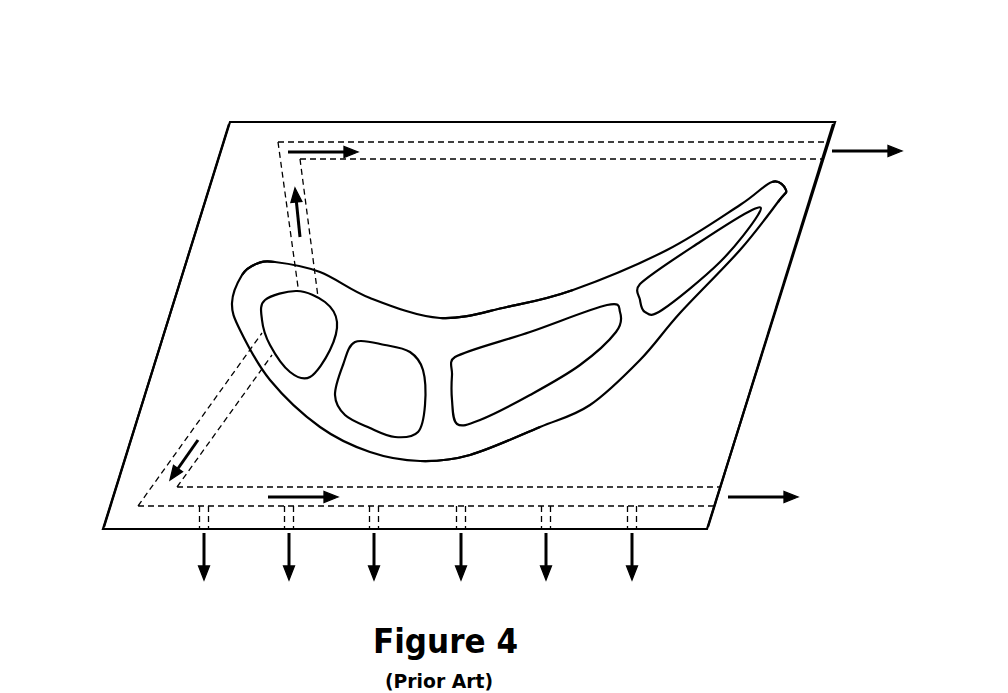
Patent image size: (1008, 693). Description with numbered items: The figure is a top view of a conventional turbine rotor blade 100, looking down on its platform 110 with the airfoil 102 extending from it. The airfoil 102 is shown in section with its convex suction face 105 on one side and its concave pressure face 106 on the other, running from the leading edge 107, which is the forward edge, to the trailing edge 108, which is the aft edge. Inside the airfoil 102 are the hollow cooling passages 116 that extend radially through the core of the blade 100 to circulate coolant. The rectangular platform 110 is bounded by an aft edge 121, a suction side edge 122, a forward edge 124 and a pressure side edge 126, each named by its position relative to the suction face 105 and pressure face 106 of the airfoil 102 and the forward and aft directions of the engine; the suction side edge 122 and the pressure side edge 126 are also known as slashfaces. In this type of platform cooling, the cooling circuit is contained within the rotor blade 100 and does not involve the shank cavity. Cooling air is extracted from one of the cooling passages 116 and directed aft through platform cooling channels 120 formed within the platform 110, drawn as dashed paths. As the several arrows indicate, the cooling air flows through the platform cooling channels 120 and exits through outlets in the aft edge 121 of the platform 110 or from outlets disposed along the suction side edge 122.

The turbine rotor blade 100 is at (125, 122).
The airfoil 102 is at (205, 288).
The suction face 105 is at (503, 440).
The pressure face 106 is at (515, 310).
The leading edge 107 is at (238, 272).
The trailing edge 108 is at (785, 187).
The platform 110 is at (458, 218).
The cooling passages 116 is at (320, 338).
The platform cooling channels 120 is at (284, 182).
The aft edge 121 is at (758, 367).
The suction side edge 122 is at (145, 530).
The forward edge 124 is at (160, 348).
The pressure side edge 126 is at (732, 122).